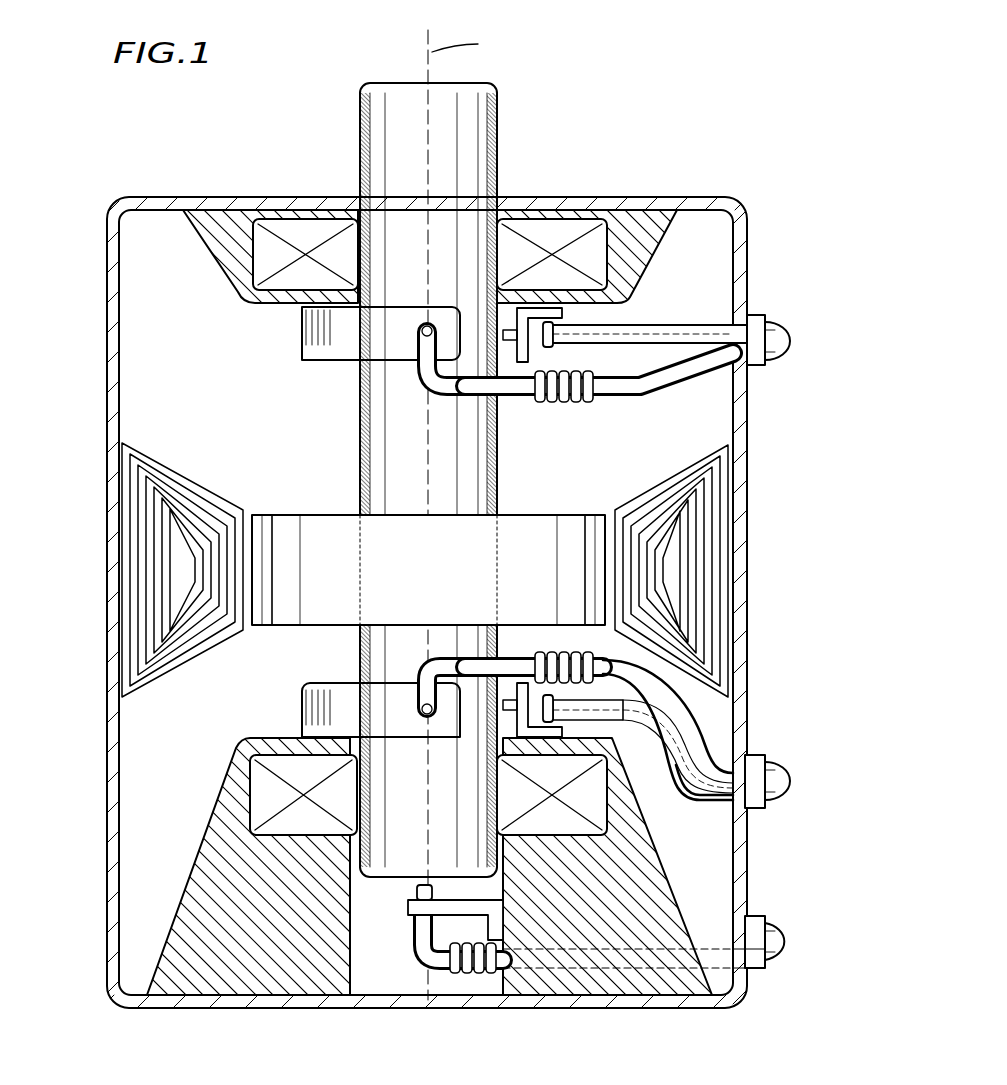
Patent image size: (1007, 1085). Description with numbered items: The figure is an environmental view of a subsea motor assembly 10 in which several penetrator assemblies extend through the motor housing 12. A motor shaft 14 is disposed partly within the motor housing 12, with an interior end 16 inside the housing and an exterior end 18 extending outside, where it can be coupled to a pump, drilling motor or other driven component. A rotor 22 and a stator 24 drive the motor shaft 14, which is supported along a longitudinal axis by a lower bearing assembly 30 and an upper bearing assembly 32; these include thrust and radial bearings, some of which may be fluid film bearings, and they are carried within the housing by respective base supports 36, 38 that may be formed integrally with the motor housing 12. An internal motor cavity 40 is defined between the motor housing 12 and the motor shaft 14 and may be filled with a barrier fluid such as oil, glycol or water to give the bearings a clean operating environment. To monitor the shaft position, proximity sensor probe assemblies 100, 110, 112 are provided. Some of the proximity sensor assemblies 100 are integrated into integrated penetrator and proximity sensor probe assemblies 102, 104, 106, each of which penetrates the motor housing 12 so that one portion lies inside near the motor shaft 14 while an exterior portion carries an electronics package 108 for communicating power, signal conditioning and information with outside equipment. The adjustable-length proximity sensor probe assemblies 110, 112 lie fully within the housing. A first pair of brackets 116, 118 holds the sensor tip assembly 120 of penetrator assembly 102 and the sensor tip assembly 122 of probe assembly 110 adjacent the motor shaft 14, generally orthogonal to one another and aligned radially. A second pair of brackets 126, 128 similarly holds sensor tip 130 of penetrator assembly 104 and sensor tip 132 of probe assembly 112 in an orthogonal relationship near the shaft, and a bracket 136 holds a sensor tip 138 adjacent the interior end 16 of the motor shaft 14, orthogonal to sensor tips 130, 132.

The subsea motor assembly 10 is at (718, 147).
The motor housing 12 is at (715, 200).
The motor shaft 14 is at (392, 455).
The interior end 16 is at (418, 862).
The exterior end 18 is at (420, 124).
The rotor 22 is at (540, 530).
The stator 24 is at (740, 490).
The lower bearing assembly 30 is at (265, 790).
The upper bearing assembly 32 is at (545, 235).
The base support 36 is at (240, 235).
The base support 38 is at (225, 973).
The internal motor cavity 40 is at (248, 432).
The proximity sensor probe assembly 100 is at (668, 325).
The integrated penetrator and proximity sensor probe assembly 102 is at (712, 328).
The integrated penetrator and proximity sensor probe assembly 104 is at (680, 748).
The integrated penetrator and proximity sensor probe assembly 106 is at (745, 990).
The electronics package 108 is at (781, 345).
The adjustable-length proximity sensor probe assembly 110 is at (507, 389).
The adjustable-length proximity sensor probe assembly 112 is at (506, 688).
The bracket 116 is at (525, 318).
The bracket 118 is at (300, 325).
The sensor tip assembly 120 is at (513, 390).
The sensor tip assembly 122 is at (415, 333).
The bracket 126 is at (627, 812).
The bracket 128 is at (300, 710).
The sensor tip 130 is at (478, 695).
The sensor tip 132 is at (413, 712).
The bracket 136 is at (458, 905).
The sensor tip 138 is at (407, 905).